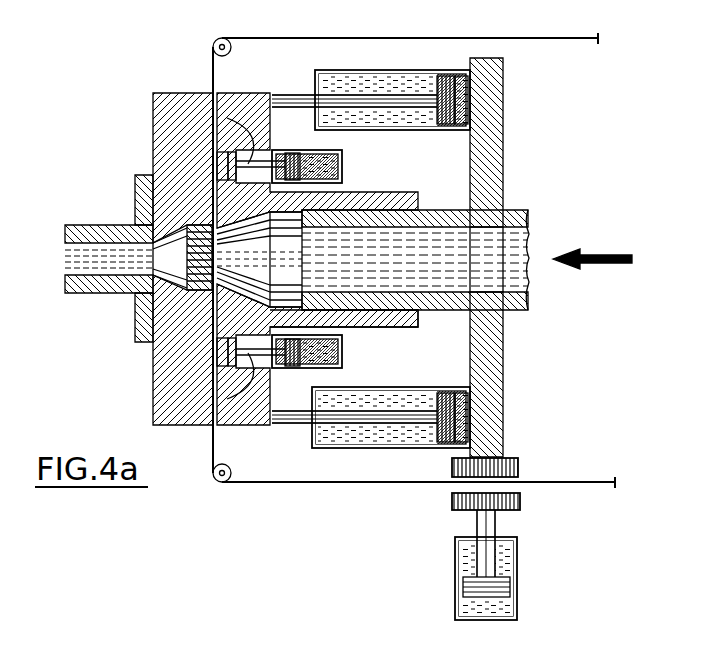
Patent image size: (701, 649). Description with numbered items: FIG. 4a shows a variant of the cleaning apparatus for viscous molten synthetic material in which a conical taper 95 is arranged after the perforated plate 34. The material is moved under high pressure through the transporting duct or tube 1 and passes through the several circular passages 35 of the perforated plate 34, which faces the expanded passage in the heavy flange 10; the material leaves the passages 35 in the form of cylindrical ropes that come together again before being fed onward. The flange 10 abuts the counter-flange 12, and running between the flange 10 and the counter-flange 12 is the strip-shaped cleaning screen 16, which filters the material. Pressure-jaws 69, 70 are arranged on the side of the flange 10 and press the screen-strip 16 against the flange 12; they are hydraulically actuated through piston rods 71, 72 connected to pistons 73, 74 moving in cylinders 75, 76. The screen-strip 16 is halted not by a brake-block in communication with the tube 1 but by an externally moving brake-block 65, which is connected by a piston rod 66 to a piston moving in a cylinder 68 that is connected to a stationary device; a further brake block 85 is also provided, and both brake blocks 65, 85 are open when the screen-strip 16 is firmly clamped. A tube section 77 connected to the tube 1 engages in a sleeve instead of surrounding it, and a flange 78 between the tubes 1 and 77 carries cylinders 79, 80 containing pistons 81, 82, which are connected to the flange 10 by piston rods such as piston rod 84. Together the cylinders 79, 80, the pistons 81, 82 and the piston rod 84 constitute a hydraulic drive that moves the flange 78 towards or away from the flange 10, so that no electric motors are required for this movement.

The transporting duct or tube 1 is at (509, 209).
The flange 10 is at (250, 100).
The counter-flange 12 is at (175, 92).
The cleaning screen 16 is at (480, 38).
The perforated plate 34 is at (165, 300).
The circular passages 35 is at (195, 293).
The brake-block 65 is at (452, 503).
The piston rod 66 is at (457, 560).
The cylinder 68 is at (519, 565).
The pressure-jaw 69 is at (217, 172).
The pressure-jaw 70 is at (213, 356).
The piston rod 71 is at (233, 128).
The piston rod 72 is at (232, 383).
The piston 73 is at (289, 150).
The piston 74 is at (297, 369).
The cylinder 75 is at (342, 164).
The cylinder 76 is at (342, 351).
The tube section 77 is at (446, 312).
The flange 78 is at (494, 120).
The cylinder 79 is at (405, 71).
The cylinder 80 is at (378, 448).
The piston 81 is at (485, 88).
The piston 82 is at (462, 408).
The piston rod 84 is at (292, 428).
The brake block 85 is at (520, 468).
The conical taper 95 is at (137, 212).